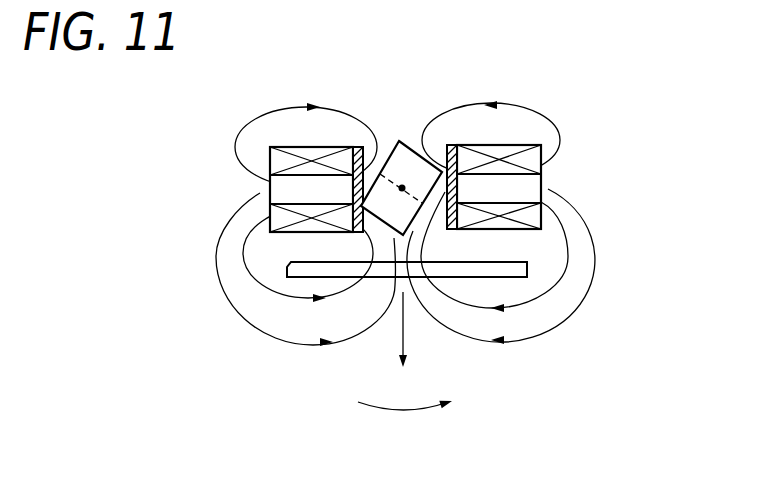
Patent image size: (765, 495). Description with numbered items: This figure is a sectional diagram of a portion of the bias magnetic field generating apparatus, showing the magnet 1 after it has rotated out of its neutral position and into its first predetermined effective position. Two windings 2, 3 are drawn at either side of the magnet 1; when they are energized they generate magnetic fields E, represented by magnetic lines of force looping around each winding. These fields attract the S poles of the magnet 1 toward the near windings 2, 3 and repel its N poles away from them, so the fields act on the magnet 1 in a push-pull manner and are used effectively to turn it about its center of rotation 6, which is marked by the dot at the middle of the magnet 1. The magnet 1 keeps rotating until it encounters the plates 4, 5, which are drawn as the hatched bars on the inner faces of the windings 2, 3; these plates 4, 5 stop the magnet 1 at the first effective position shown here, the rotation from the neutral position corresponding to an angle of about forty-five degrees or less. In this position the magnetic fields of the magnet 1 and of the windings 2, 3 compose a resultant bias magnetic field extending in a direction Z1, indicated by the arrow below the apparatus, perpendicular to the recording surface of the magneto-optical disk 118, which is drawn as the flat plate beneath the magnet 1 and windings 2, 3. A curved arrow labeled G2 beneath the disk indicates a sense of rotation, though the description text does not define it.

The magnet 1 is at (418, 156).
The winding 2 is at (532, 157).
The winding 3 is at (278, 187).
The plate 4 is at (449, 157).
The plate 5 is at (358, 148).
The center of rotation 6 is at (403, 185).
The magneto-optical disk 118 is at (528, 265).
The magnetic fields E is at (245, 267).
The direction Z1 is at (416, 333).
The direction of rotation G2 is at (411, 421).